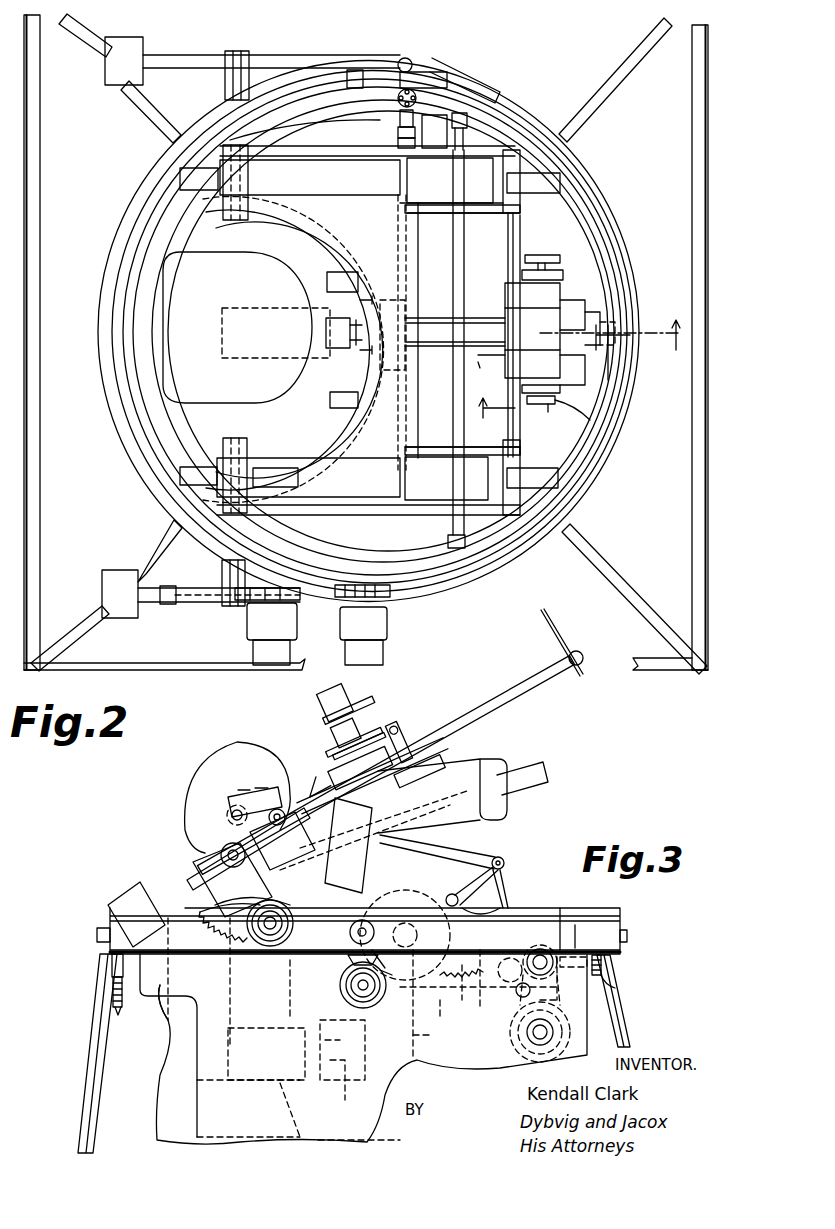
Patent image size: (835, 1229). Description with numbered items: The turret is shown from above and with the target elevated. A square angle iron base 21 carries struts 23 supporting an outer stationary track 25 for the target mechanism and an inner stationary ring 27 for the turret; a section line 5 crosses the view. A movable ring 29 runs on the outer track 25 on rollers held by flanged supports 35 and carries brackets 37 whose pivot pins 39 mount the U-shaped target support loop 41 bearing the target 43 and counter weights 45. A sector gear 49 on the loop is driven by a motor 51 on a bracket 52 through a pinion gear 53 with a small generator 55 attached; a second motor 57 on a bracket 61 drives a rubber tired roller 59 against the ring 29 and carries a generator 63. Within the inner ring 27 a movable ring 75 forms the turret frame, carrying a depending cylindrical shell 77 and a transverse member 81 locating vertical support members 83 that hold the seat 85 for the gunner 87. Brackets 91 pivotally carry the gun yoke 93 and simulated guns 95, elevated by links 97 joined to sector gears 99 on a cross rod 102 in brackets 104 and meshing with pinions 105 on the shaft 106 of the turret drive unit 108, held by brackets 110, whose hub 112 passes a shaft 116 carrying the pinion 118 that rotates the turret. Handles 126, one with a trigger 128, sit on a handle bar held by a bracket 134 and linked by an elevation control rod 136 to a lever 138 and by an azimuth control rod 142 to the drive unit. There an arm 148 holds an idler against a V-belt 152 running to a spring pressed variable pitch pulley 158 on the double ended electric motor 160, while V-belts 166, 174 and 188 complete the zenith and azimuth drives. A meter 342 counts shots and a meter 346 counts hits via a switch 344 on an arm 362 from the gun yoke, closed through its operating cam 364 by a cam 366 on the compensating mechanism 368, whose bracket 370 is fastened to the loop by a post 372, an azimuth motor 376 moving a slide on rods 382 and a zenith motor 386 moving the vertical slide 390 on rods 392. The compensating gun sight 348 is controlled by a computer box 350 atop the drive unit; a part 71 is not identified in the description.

In FIG. 2, the square angle iron base 21 is at (40, 521).
In FIG. 2, the struts 23 is at (620, 90).
In FIG. 3, the struts 23 is at (98, 1038).
In FIG. 2, the outer stationary ring 25 is at (127, 392).
In FIG. 2, the inner stationary ring 27 is at (143, 412).
In FIG. 2, the movable ring 29 is at (122, 436).
In FIG. 3, the movable ring 29 is at (625, 952).
In FIG. 3, the flanged supports 35 is at (97, 933).
In FIG. 2, the brackets 37 is at (225, 82).
In FIG. 3, the brackets 37 is at (178, 866).
In FIG. 2, the pivot pin 39 is at (242, 51).
In FIG. 3, the pivot pin 39 is at (221, 852).
In FIG. 2, the target support loop 41 is at (490, 562).
In FIG. 3, the target support loop 41 is at (500, 693).
In FIG. 2, the target 43 is at (630, 335).
In FIG. 3, the target 43 is at (548, 634).
In FIG. 2, the counter weights 45 is at (138, 30).
In FIG. 3, the counter weights 45 is at (128, 890).
In FIG. 2, the sector gear 49 is at (186, 605).
In FIG. 3, the sector gear 49 is at (290, 893).
In FIG. 2, the electric motor 51 is at (247, 616).
In FIG. 3, the electric motor 51 is at (262, 948).
In FIG. 3, the bracket 52 is at (302, 940).
In FIG. 3, the pinion gear 53 is at (272, 975).
In FIG. 2, the small generator 55 is at (253, 650).
In FIG. 3, the small generator 55 is at (262, 956).
In FIG. 2, the second motor 57 is at (387, 625).
In FIG. 3, the second motor 57 is at (340, 985).
In FIG. 2, the rubber tired roller 59 is at (392, 598).
In FIG. 3, the rubber tired roller 59 is at (348, 962).
In FIG. 2, the bracket 61 is at (326, 603).
In FIG. 3, the bracket 61 is at (396, 952).
In FIG. 2, the small generator 63 is at (383, 652).
In FIG. 3, the small generator 63 is at (352, 998).
In FIG. 3, the bolt 71 is at (113, 990).
In FIG. 2, the movable ring 75 is at (580, 235).
In FIG. 3, the cylindrical shell 77 is at (158, 995).
In FIG. 2, the transverse member 81 is at (418, 415).
In FIG. 3, the transverse member 81 is at (425, 948).
In FIG. 2, the vertical support members 83 is at (415, 380).
In FIG. 3, the vertical support members 83 is at (430, 1035).
In FIG. 2, the seat 85 is at (205, 258).
In FIG. 3, the gunner 87 is at (160, 1080).
In FIG. 2, the brackets 91 is at (215, 214).
In FIG. 2, the gun yoke 93 is at (333, 433).
In FIG. 3, the gun yoke 93 is at (385, 862).
In FIG. 2, the simulated guns 95 is at (312, 215).
In FIG. 3, the simulated guns 95 is at (470, 758).
In FIG. 2, the links 97 is at (444, 152).
In FIG. 3, the links 97 is at (424, 850).
In FIG. 2, the sector gears 99 is at (496, 215).
In FIG. 3, the sector gears 99 is at (464, 992).
In FIG. 2, the cross rod 102 is at (466, 375).
In FIG. 3, the cross rod 102 is at (450, 893).
In FIG. 2, the brackets 104 is at (470, 123).
In FIG. 3, the brackets 104 is at (490, 905).
In FIG. 2, the pinions 105 is at (520, 222).
In FIG. 3, the pinions 105 is at (490, 962).
In FIG. 2, the shaft 106 is at (512, 245).
In FIG. 2, the turret drive unit 108 is at (505, 296).
In FIG. 3, the turret drive unit 108 is at (563, 1003).
In FIG. 2, the brackets 110 is at (566, 310).
In FIG. 2, the hub 112 is at (576, 328).
In FIG. 3, the hub 112 is at (572, 978).
In FIG. 2, the shaft 116 is at (612, 382).
In FIG. 3, the shaft 116 is at (586, 935).
In FIG. 2, the pinion 118 is at (612, 368).
In FIG. 3, the pinion 118 is at (615, 988).
In FIG. 2, the handles 126 is at (330, 272).
In FIG. 3, the handles 126 is at (328, 1100).
In FIG. 3, the trigger 128 is at (350, 1055).
In FIG. 3, the bracket 134 is at (350, 1080).
In FIG. 2, the elevation control rod 136 is at (432, 346).
In FIG. 3, the elevation control rod 136 is at (415, 1006).
In FIG. 3, the lever 138 is at (504, 978).
In FIG. 2, the azimuth control rod 142 is at (430, 318).
In FIG. 3, the arm 148 is at (520, 990).
In FIG. 2, the V-belt 152 is at (590, 420).
In FIG. 3, the V-belt 152 is at (510, 1032).
In FIG. 3, the spring pressed variable pitch pulley 158 is at (532, 1055).
In FIG. 3, the double ended electric motor 160 is at (512, 1048).
In FIG. 2, the V-belt 166 is at (546, 385).
In FIG. 2, the V-belt 174 is at (560, 260).
In FIG. 2, the V-belt 188 is at (522, 275).
In FIG. 3, the meter 342 is at (236, 796).
In FIG. 2, the switch 344 is at (398, 142).
In FIG. 3, the second meter 346 is at (262, 782).
In FIG. 2, the compensating gun sight 348 is at (318, 306).
In FIG. 3, the compensating gun sight 348 is at (334, 768).
In FIG. 2, the computer box 350 is at (512, 345).
In FIG. 3, the computer box 350 is at (560, 905).
In FIG. 2, the arm 362 is at (325, 138).
In FIG. 3, the arm 362 is at (380, 822).
In FIG. 2, the operating cam 364 is at (398, 130).
In FIG. 2, the cam 366 is at (400, 117).
In FIG. 2, the compensating mechanism 368 is at (480, 53).
In FIG. 3, the compensating mechanism 368 is at (415, 713).
In FIG. 2, the bracket 370 is at (398, 62).
In FIG. 2, the post 372 is at (409, 60).
In FIG. 2, the electric motor 376 is at (355, 70).
In FIG. 3, the rods 382 is at (396, 720).
In FIG. 3, the electric motor 386 is at (344, 690).
In FIG. 2, the vertical slide 390 is at (455, 70).
In FIG. 3, the vertical slide 390 is at (332, 726).
In FIG. 3, the rods 392 is at (330, 741).
In FIG. 2, the section line 5 is at (579, 360).